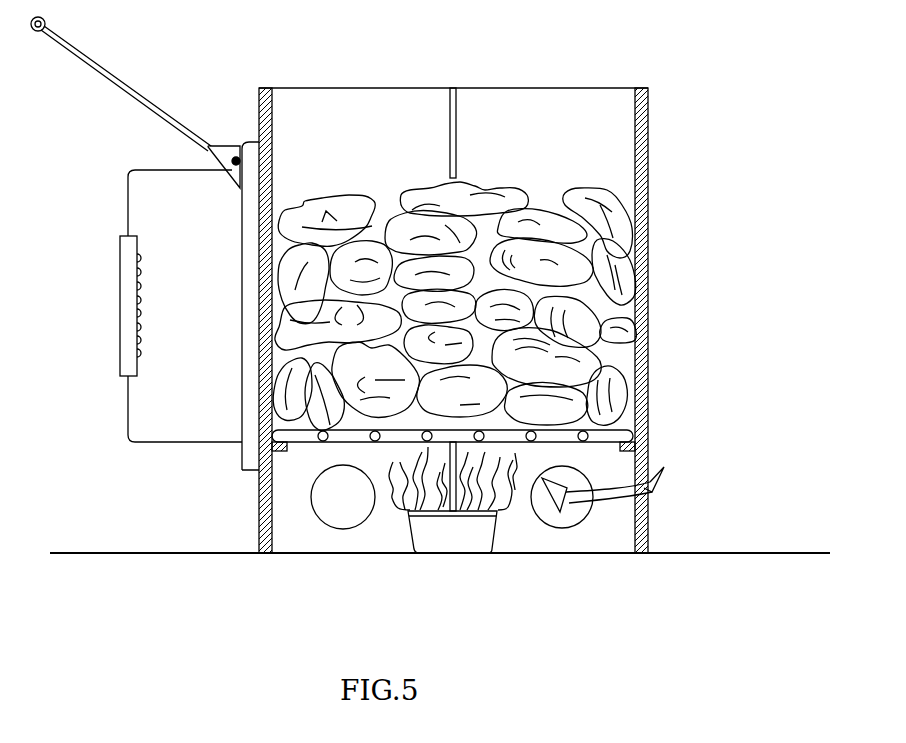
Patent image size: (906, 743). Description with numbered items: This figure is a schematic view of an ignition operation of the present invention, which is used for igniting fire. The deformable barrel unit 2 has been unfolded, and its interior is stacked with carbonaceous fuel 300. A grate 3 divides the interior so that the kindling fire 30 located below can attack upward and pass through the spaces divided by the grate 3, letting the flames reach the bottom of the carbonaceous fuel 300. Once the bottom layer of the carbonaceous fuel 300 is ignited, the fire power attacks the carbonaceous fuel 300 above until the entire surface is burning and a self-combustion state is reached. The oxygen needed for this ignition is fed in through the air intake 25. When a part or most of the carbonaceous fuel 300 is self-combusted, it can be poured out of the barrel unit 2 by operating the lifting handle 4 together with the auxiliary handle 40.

The deformable barrel unit 2 is at (714, 275).
The grate 3 is at (613, 438).
The lifting handle 4 is at (130, 211).
The air intake 25 is at (339, 513).
The kindling fire 30 is at (453, 540).
The auxiliary handle 40 is at (102, 77).
The carbonaceous fuel 300 is at (613, 217).